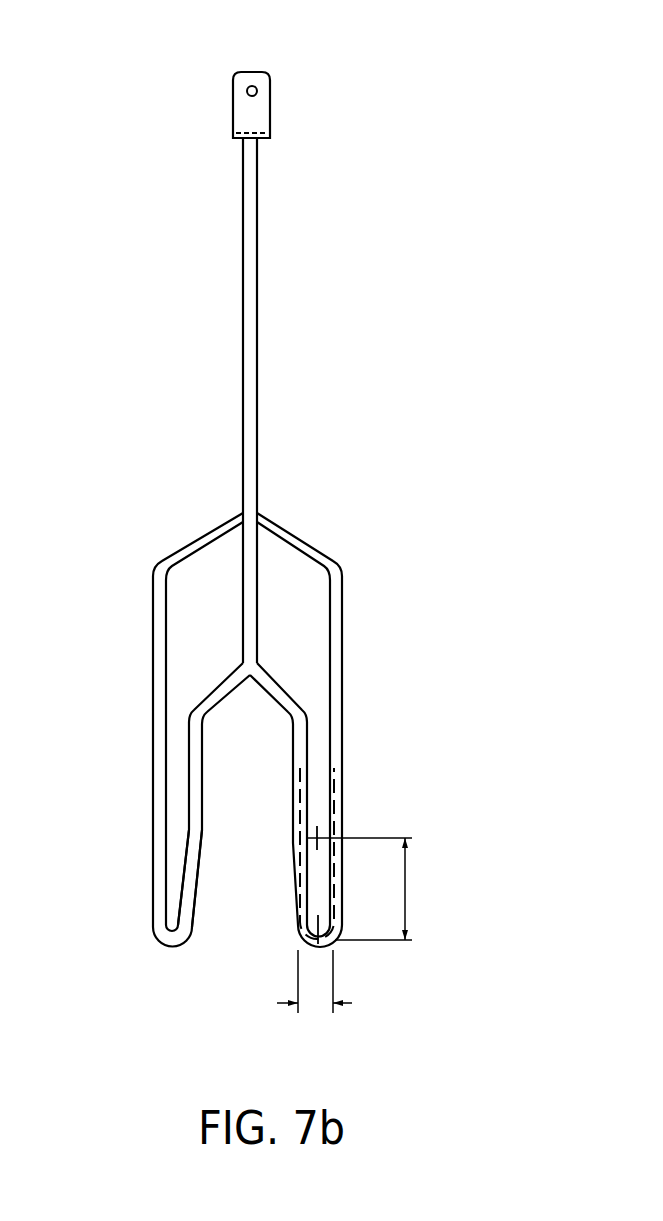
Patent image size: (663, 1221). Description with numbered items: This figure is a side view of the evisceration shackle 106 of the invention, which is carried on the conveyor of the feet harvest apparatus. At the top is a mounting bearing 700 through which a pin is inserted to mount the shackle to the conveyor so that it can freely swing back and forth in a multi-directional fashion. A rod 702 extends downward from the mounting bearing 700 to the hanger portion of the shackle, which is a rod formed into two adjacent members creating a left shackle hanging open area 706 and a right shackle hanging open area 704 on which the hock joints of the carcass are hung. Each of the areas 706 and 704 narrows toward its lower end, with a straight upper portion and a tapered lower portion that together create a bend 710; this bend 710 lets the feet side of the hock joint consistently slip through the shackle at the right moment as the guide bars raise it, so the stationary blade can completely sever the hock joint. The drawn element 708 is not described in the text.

The evisceration shackle 106 is at (469, 277).
The mounting bearing 700 is at (253, 116).
The rod 702 is at (252, 270).
The right shackle hanging open area 704 is at (316, 755).
The left shackle hanging open area 706 is at (178, 752).
The inner sheath / dashed insert 708 is at (293, 855).
The bend 710 is at (188, 830).